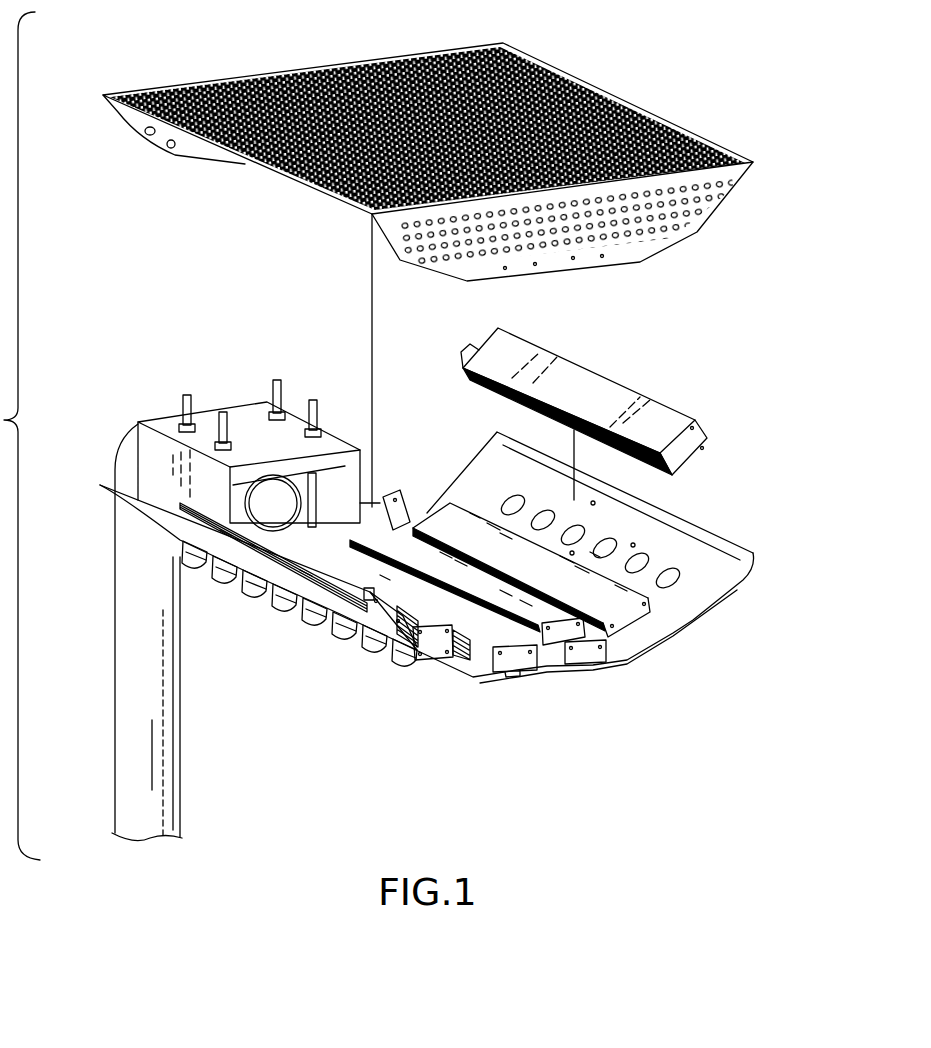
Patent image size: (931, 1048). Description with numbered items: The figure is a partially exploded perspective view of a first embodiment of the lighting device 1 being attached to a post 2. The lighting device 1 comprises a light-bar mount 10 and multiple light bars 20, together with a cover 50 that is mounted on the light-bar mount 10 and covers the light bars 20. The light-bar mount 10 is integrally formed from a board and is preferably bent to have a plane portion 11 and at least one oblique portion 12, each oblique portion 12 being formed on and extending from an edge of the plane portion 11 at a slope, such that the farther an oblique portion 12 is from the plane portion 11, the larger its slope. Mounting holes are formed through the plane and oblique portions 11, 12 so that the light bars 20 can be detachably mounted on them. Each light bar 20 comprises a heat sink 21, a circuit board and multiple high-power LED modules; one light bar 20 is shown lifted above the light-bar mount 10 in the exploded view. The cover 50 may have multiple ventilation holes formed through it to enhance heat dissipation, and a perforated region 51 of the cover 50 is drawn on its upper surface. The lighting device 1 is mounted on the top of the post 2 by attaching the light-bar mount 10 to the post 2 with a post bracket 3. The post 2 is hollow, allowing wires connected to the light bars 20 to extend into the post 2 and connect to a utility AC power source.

The lighting device 1 is at (436, 596).
The post 2 is at (109, 629).
The post bracket 3 is at (233, 402).
The light-bar mount 10 is at (436, 572).
The plane portion 11 is at (550, 662).
The oblique portion 12 is at (698, 584).
The light bar 20 is at (584, 401).
The heat sink 21 is at (530, 350).
The cover 50 is at (428, 258).
The perforated grid 51 is at (306, 74).